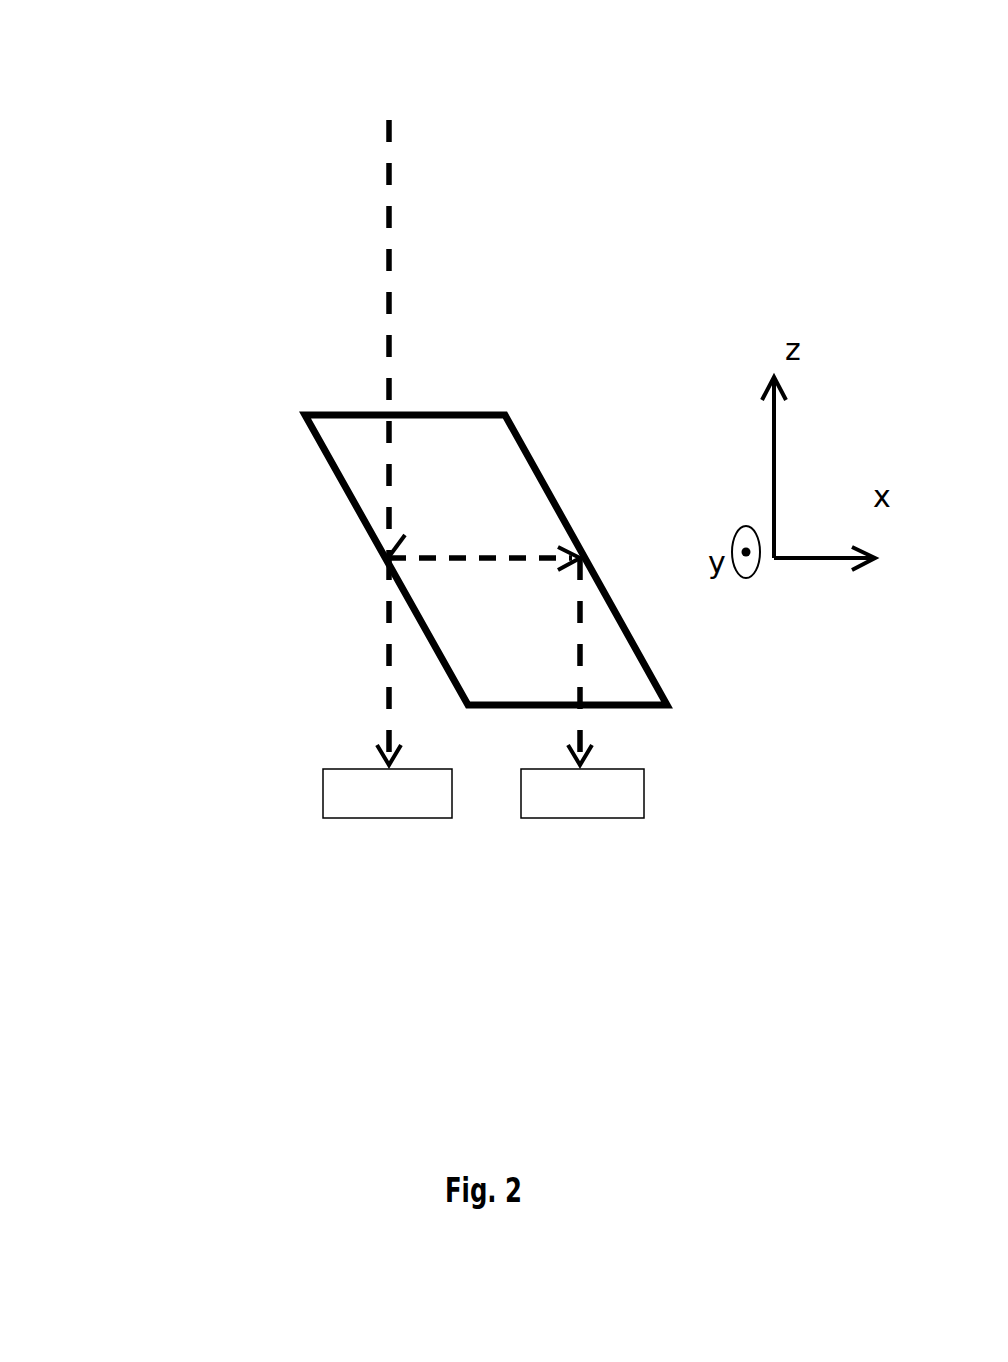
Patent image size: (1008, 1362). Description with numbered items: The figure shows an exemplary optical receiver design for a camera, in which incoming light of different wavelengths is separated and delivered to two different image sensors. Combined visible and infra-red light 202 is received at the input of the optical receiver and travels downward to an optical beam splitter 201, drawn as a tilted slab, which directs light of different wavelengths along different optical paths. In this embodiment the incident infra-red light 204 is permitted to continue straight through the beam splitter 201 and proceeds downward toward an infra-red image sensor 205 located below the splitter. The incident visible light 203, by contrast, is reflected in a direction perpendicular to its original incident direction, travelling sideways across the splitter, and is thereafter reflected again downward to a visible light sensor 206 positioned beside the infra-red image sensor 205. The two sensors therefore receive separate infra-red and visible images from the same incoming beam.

The optical beam splitter 201 is at (302, 470).
The visible and infra-red light 202 is at (387, 190).
The visible light 203 is at (527, 553).
The infra-red light 204 is at (388, 637).
The infra-red image sensor 205 is at (335, 797).
The visible light sensor 206 is at (617, 797).